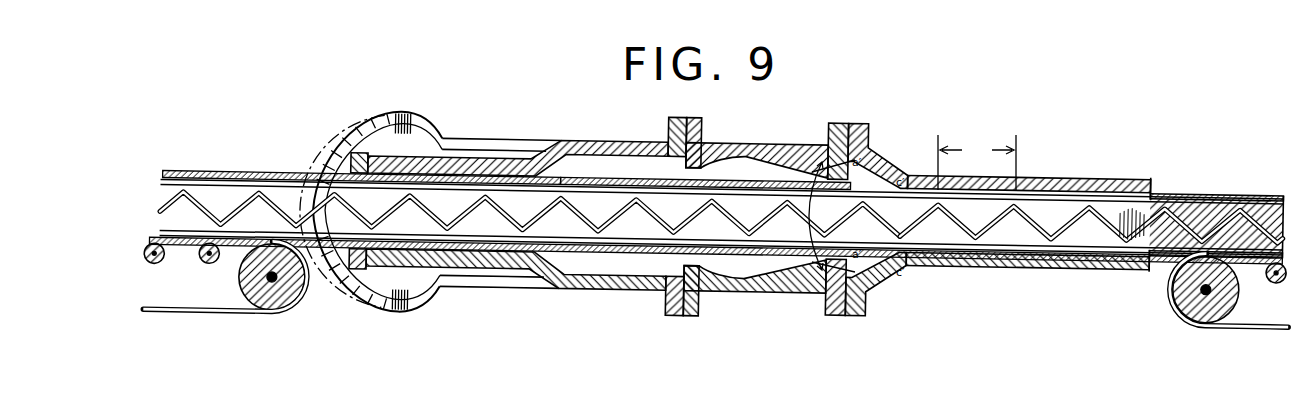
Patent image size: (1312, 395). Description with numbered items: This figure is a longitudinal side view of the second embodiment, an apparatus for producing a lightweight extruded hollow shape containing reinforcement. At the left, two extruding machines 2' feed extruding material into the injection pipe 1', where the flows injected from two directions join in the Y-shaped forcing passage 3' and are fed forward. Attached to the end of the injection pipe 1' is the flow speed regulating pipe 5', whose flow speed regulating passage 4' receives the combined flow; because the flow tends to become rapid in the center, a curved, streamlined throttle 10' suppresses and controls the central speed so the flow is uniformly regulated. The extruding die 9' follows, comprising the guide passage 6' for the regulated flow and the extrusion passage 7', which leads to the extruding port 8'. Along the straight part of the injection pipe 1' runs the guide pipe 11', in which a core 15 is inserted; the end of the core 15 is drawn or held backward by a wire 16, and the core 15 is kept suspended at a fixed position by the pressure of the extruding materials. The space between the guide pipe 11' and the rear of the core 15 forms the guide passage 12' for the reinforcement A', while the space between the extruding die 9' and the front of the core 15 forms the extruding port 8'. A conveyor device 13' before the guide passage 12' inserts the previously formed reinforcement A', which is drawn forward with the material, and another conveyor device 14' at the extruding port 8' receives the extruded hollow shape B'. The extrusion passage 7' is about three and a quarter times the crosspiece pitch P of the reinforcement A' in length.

The injection pipe 1' is at (510, 131).
The extruding machine 2' is at (348, 188).
The forcing passage 3' is at (508, 300).
The flow speed regulating passage 4' is at (755, 294).
The flow speed regulating pipe 5' is at (757, 139).
The guide passage for the regulated flow 6' is at (874, 210).
The extrusion passage 7' is at (1027, 278).
The extruding port 8' is at (1216, 199).
The extruding die 9' is at (1028, 155).
The throttle 10' is at (705, 220).
The guide pipe 11' is at (706, 144).
The guide passage 12' is at (721, 152).
The conveyor device 13' is at (225, 300).
The conveyor device 14' is at (1229, 314).
The core 15 is at (1066, 208).
The wire 16 is at (225, 206).
The reinforcement A' is at (360, 154).
The extruded hollow shape B' is at (715, 199).
The crosspiece pitch P is at (977, 162).